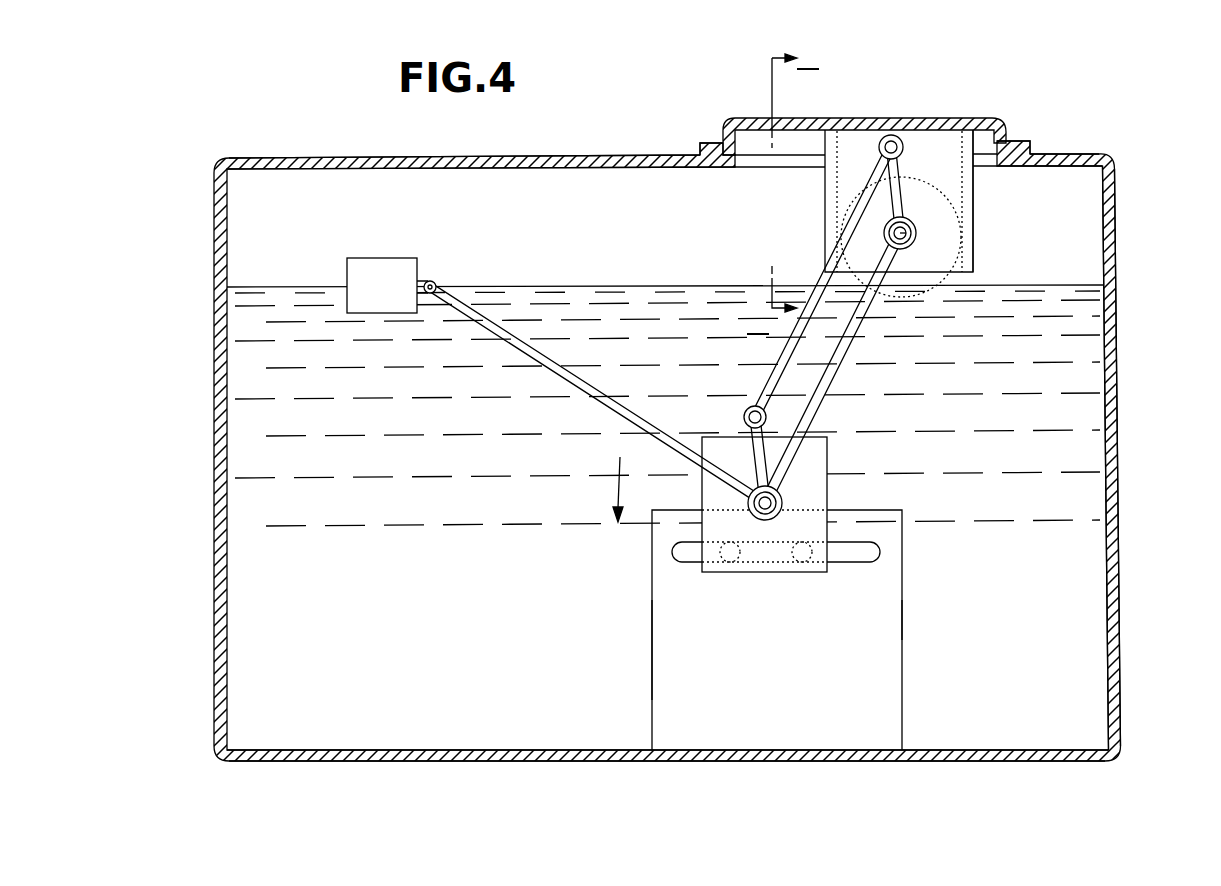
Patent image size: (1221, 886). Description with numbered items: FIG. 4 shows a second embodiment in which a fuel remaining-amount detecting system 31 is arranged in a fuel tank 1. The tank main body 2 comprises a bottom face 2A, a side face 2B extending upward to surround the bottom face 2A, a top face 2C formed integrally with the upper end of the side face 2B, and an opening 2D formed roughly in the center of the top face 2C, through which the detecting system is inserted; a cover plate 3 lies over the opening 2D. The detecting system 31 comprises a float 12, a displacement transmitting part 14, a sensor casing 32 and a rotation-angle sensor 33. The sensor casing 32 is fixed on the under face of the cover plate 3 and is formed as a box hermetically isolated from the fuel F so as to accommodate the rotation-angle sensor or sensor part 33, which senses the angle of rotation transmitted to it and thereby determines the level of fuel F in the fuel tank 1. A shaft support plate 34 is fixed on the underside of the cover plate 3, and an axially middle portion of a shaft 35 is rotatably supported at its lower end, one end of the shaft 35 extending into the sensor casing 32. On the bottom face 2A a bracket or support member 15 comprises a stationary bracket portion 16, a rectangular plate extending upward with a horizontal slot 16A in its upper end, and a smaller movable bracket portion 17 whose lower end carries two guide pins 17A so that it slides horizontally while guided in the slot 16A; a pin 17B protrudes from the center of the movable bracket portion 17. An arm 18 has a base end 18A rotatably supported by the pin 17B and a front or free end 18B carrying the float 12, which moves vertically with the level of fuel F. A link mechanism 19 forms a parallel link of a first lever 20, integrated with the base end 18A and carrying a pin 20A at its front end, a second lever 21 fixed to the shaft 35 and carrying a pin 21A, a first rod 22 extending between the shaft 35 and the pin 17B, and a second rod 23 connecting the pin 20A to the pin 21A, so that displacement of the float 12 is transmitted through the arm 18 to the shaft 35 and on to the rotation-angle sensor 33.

The fuel tank 1 is at (243, 150).
The tank main body 2 is at (317, 158).
The bottom face 2A is at (415, 763).
The side face 2B is at (1117, 440).
The top face 2C is at (583, 155).
The opening 2D is at (1003, 144).
The cover plate 3 is at (747, 118).
The float 12 is at (380, 270).
The displacement transmitting part 14 is at (835, 485).
The bracket or support member 15 is at (662, 645).
The stationary bracket portion 16 is at (902, 730).
The slot 16A is at (892, 613).
The movable bracket portion 17 is at (862, 562).
The guide pins 17A is at (732, 562).
The pin 17B is at (783, 562).
The arm 18 is at (503, 333).
The base end 18A is at (745, 562).
The front end or free end 18B is at (453, 287).
The link mechanism 19 is at (965, 280).
The first lever 20 is at (750, 455).
The pin 20A is at (748, 408).
The second lever 21 is at (900, 170).
The pin 21A is at (893, 134).
The first rod 22 is at (832, 380).
The second rod 23 is at (863, 207).
The fuel remaining-amount detecting system 31 is at (795, 247).
The sensor casing 32 is at (963, 147).
The rotation-angle sensor 33 is at (925, 197).
The shaft support plate 34 is at (830, 147).
The shaft 35 is at (916, 233).
The fuel F is at (293, 333).